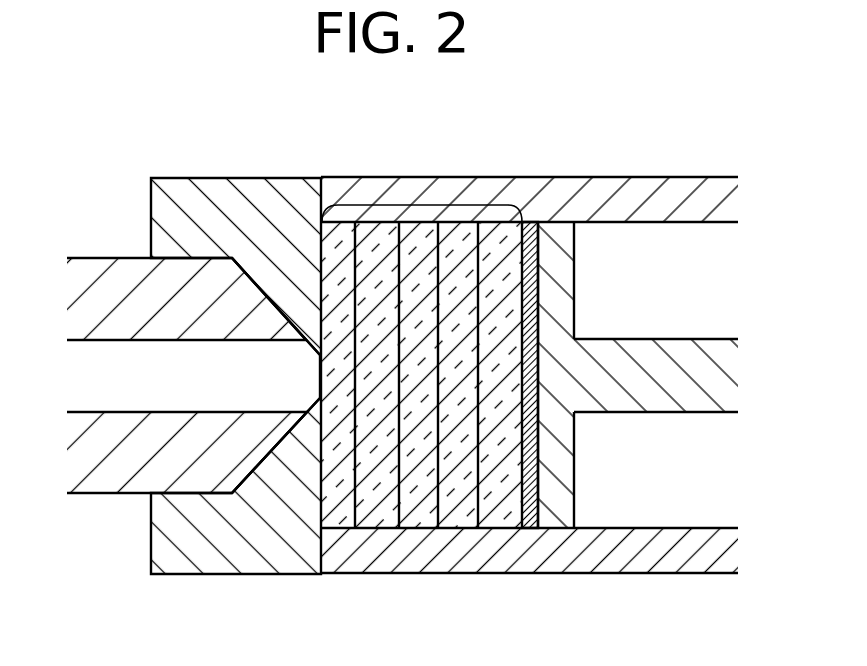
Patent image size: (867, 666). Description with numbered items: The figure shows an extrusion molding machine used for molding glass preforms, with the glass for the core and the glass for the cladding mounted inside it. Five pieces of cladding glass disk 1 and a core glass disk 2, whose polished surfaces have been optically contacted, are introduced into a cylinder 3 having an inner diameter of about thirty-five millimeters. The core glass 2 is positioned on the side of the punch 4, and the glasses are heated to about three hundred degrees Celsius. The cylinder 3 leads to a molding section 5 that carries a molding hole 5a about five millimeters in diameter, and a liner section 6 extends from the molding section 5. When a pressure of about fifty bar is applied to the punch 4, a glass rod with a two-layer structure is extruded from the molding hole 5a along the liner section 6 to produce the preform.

The cladding glass disk 1 is at (424, 205).
The core glass disk 2 is at (523, 222).
The cylinder 3 is at (632, 542).
The punch 4 is at (563, 230).
The molding section 5 is at (229, 212).
The molding hole 5a is at (313, 375).
The liner section 6 is at (105, 295).